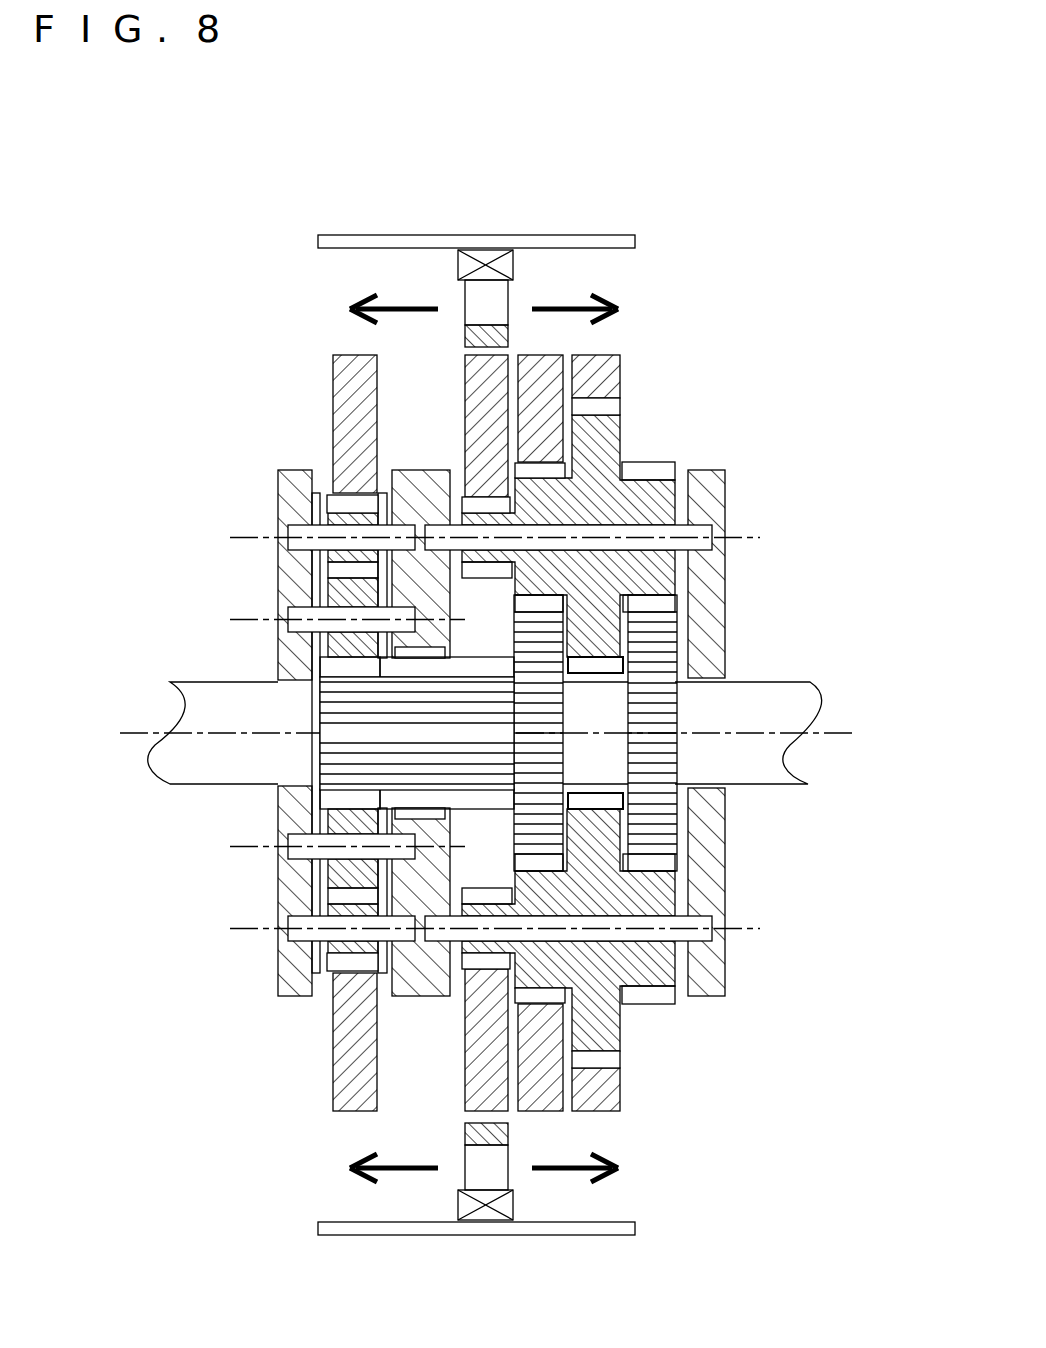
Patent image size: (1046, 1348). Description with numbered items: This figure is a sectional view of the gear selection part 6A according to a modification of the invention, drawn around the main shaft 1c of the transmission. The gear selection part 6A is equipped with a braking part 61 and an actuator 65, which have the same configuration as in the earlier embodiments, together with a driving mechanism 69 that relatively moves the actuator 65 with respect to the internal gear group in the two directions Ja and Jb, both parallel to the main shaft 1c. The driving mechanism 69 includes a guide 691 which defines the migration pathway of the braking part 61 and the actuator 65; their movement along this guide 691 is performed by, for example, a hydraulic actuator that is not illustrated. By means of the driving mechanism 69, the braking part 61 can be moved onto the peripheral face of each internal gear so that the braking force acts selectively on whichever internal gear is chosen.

The main shaft 1c is at (843, 730).
The gear selection part 6A is at (474, 696).
The braking part 61 is at (480, 292).
The actuator 65 is at (484, 265).
The driving mechanism 69 is at (535, 696).
The guide 691 is at (367, 235).
The direction Ja is at (572, 305).
The direction Jb is at (395, 305).